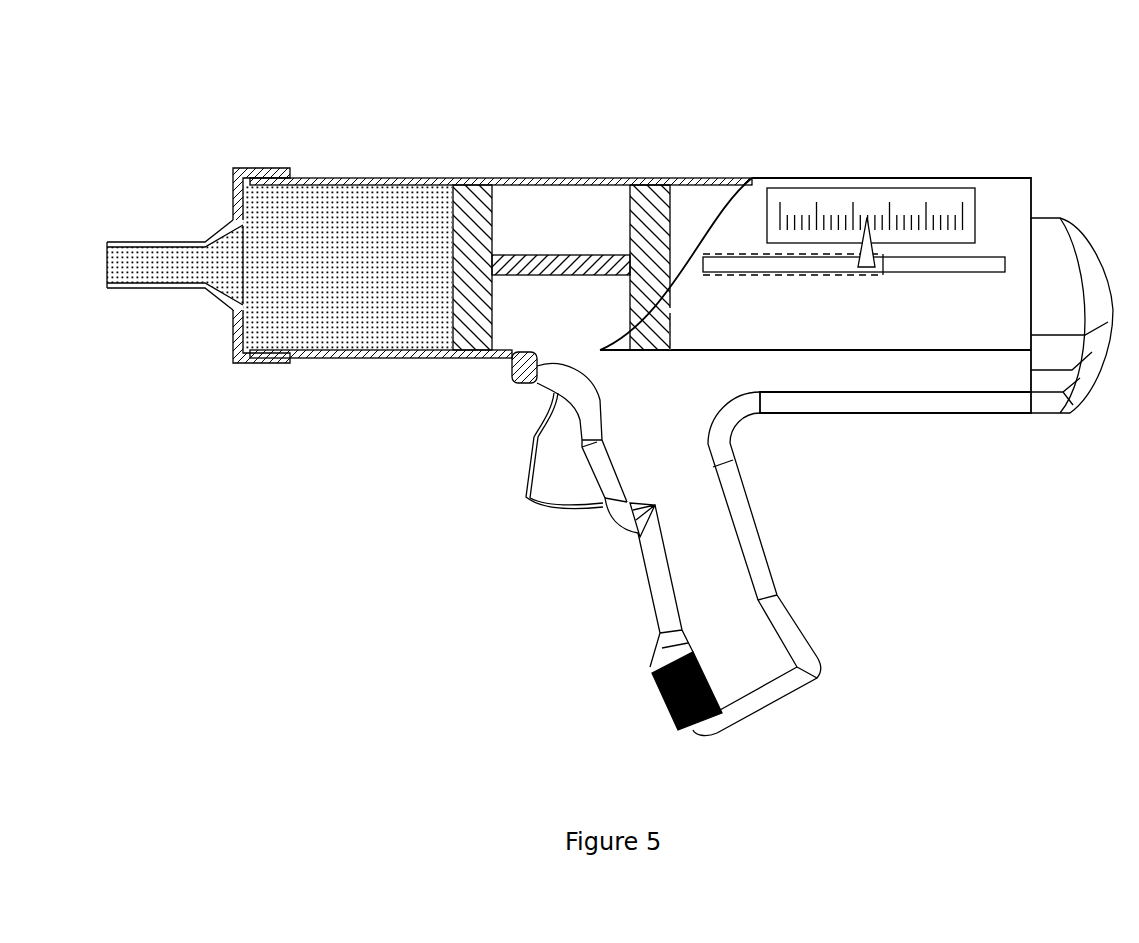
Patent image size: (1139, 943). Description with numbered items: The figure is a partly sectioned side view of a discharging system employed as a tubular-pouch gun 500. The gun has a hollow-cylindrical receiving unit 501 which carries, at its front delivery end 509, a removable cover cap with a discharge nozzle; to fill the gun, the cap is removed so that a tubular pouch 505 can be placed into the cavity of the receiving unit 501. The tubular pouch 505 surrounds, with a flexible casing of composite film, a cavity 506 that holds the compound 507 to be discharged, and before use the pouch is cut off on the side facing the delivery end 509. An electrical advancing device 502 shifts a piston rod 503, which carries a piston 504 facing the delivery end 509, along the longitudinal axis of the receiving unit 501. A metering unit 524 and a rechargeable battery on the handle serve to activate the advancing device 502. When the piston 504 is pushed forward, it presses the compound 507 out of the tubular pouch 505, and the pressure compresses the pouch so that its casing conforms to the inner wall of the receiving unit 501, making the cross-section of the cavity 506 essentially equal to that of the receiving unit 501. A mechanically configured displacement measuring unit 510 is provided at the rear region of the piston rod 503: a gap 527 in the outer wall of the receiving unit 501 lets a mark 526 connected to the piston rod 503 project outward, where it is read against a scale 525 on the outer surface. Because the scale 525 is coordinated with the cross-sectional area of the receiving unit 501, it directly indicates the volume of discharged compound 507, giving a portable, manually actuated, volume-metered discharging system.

The tubular-pouch gun 500 is at (257, 90).
The receiving unit 501 is at (398, 178).
The electrical advancing device 502 is at (662, 240).
The piston rod 503 is at (552, 268).
The piston 504 is at (480, 313).
The tubular pouch 505 is at (313, 185).
The cavity 506 is at (380, 290).
The compound 507 is at (313, 283).
The delivery end 509 is at (177, 357).
The displacement measuring unit 510 is at (933, 300).
The metering unit 524 is at (550, 542).
The scale 525 is at (827, 188).
The mark 526 is at (867, 260).
The gap 527 is at (967, 258).